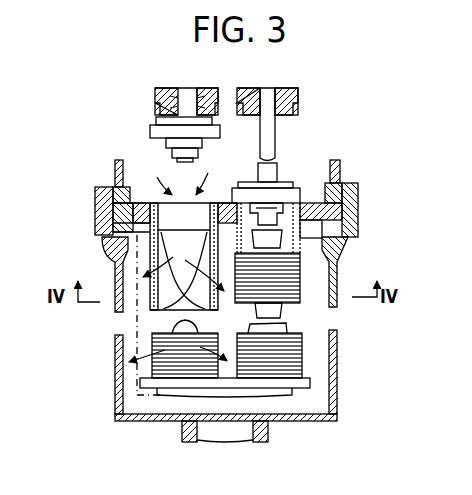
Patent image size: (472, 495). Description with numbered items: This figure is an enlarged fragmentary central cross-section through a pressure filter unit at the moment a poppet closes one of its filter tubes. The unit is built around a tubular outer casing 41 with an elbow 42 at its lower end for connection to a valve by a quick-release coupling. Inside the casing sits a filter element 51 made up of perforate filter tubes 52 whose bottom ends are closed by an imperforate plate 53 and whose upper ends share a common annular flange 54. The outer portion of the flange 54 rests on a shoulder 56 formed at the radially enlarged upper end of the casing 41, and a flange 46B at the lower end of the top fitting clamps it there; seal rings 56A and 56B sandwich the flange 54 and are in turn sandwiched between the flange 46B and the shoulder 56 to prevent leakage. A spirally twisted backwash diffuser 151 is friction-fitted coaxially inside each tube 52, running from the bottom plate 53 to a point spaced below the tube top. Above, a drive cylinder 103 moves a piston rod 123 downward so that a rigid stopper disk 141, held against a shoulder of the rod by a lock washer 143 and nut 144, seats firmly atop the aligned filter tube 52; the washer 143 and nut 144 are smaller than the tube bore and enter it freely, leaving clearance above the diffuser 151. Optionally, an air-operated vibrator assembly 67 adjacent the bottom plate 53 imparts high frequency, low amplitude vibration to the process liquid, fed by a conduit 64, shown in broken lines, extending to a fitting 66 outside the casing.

The drive cylinder 103 is at (302, 87).
The piston rod 123 is at (270, 123).
The nut 144 is at (277, 180).
The lock washer 143 is at (268, 197).
The stopper disk 141 is at (338, 160).
The flange 46B is at (345, 187).
The annular flange 54 is at (357, 205).
The shoulder 56 is at (358, 221).
The backwash diffuser 151 is at (349, 241).
The filter tube 52 is at (300, 281).
The filter element 51 is at (313, 330).
The outer casing 41 is at (338, 360).
The imperforate plate 53 is at (273, 382).
The elbow 42 is at (268, 437).
The vibrator assembly 67 is at (170, 393).
The conduit 64 is at (122, 392).
The fitting 66 is at (102, 238).
The seal ring 56B is at (113, 226).
The seal ring 56A is at (114, 207).